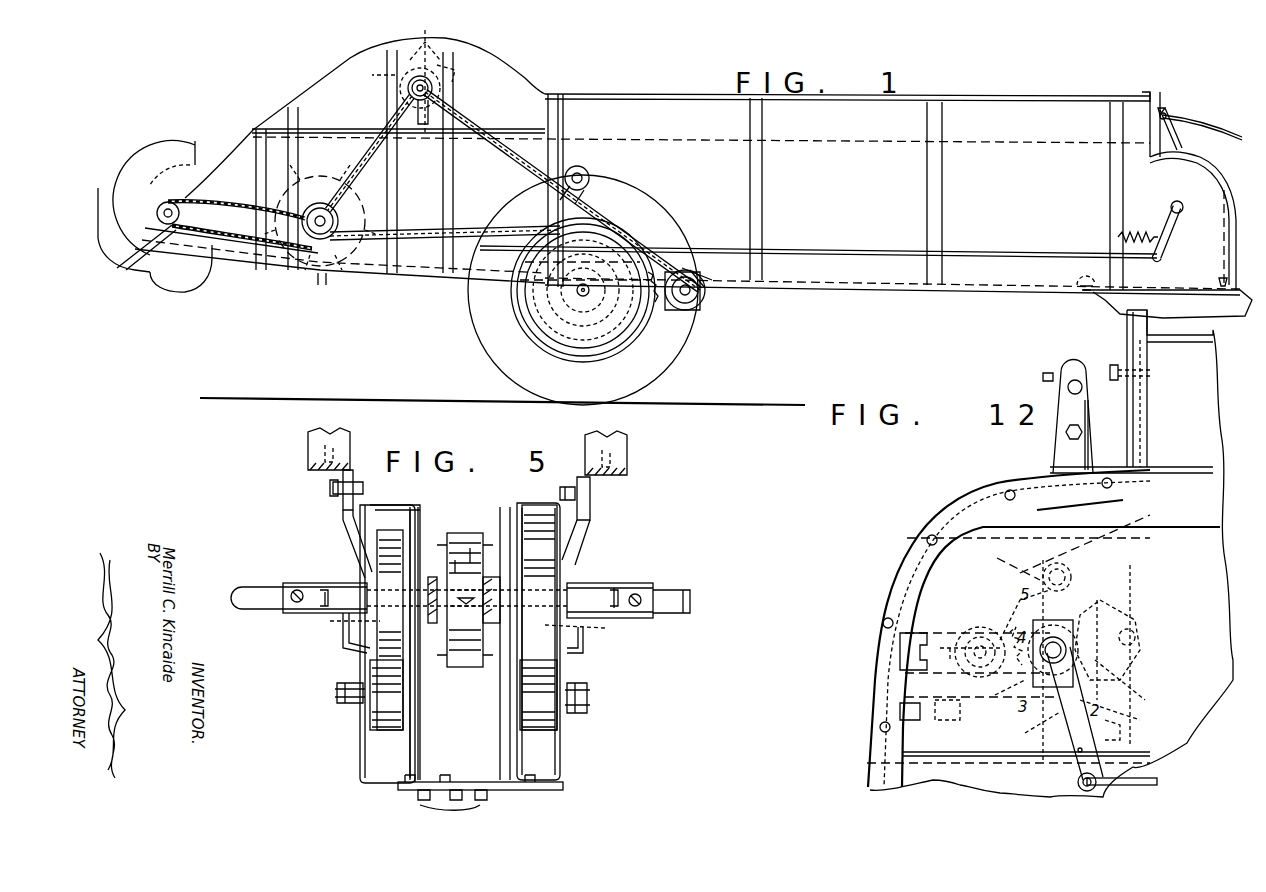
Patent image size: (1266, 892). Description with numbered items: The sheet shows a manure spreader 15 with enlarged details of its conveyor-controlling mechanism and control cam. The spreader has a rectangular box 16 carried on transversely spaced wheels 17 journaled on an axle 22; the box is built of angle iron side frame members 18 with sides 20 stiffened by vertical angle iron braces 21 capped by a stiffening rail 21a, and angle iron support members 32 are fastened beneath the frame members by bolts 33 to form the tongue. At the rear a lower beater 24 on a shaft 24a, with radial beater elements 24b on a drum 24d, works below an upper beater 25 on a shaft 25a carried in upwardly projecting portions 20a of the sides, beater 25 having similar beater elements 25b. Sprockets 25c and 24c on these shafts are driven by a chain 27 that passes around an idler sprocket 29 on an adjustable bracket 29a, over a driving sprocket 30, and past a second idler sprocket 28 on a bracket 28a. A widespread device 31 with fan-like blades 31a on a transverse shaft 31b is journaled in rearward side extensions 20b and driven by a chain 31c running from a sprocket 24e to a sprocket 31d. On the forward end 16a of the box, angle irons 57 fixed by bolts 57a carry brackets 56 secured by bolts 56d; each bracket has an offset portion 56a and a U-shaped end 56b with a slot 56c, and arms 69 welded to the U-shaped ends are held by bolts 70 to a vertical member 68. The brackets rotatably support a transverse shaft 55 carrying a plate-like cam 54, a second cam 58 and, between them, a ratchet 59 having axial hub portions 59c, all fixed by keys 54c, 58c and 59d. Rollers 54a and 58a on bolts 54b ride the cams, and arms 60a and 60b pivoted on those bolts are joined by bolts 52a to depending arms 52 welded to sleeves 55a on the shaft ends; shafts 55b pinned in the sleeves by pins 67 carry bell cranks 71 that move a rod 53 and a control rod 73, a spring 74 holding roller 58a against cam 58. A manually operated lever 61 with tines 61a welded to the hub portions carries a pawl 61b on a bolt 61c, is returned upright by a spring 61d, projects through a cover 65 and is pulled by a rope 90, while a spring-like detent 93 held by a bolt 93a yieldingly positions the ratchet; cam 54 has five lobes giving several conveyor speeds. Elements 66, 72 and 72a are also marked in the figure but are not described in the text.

In FIG. 1, the manure spreader 15 is at (1022, 95).
In FIG. 1, the rectangular box 16 is at (1158, 205).
In FIG. 12, the rectangular box 16 is at (1205, 444).
In FIG. 12, the forward end of the box 16a is at (1130, 358).
In FIG. 1, the wheels 17 is at (665, 360).
In FIG. 1, the angle iron side frame members 18 is at (1010, 281).
In FIG. 1, the sides 20 is at (820, 258).
In FIG. 1, the upwardly projecting portions of the sides 20a is at (382, 60).
In FIG. 1, the side extensions 20b is at (190, 250).
In FIG. 1, the angle iron braces 21 is at (564, 124).
In FIG. 1, the stiffening rail 21a is at (920, 96).
In FIG. 1, the axle 22 is at (583, 296).
In FIG. 1, the beater 24 is at (318, 190).
In FIG. 1, the shaft of beater 24 24a is at (318, 225).
In FIG. 1, the beater elements 24b is at (324, 285).
In FIG. 1, the sprocket on shaft 24a 24c is at (328, 205).
In FIG. 1, the drum 24d is at (365, 222).
In FIG. 1, the sprocket adjacent sprocket 24c 24e is at (312, 238).
In FIG. 1, the beater 25 is at (400, 82).
In FIG. 1, the shaft of beater 25 25a is at (448, 82).
In FIG. 1, the beater elements 25b is at (437, 52).
In FIG. 1, the sprocket on shaft 25a 25c is at (420, 128).
In FIG. 1, the chain 27 is at (490, 120).
In FIG. 1, the second idler sprocket 28 is at (590, 175).
In FIG. 1, the bracket 28a is at (582, 201).
In FIG. 1, the idler sprocket 29 is at (700, 303).
In FIG. 1, the adjustable bracket 29a is at (696, 268).
In FIG. 1, the driving sprocket 30 is at (652, 315).
In FIG. 1, the wide spread device 31 is at (135, 140).
In FIG. 1, the fan-like blades 31a is at (182, 150).
In FIG. 1, the transverse shaft 31b is at (160, 215).
In FIG. 1, the chain 31c is at (212, 272).
In FIG. 1, the sprocket 31d is at (160, 233).
In FIG. 1, the angle iron support members 32 is at (1210, 312).
In FIG. 1, the bolts 33 is at (1073, 288).
In FIG. 5, the depending arm 52 is at (322, 587).
In FIG. 12, the depending arm 52 is at (1062, 653).
In FIG. 5, the transverse bolt 52a is at (622, 588).
In FIG. 12, the rod 53 is at (1120, 786).
In FIG. 5, the plate-like cam 54 is at (545, 560).
In FIG. 12, the plate-like cam 54 is at (1140, 605).
In FIG. 5, the roller 54a is at (558, 725).
In FIG. 12, the roller 54a is at (985, 625).
In FIG. 5, the transverse bolt 54b is at (337, 692).
In FIG. 12, the transverse bolt 54b is at (965, 670).
In FIG. 5, the key 54c is at (592, 628).
In FIG. 5, the transverse shaft 55 is at (600, 590).
In FIG. 12, the transverse shaft 55 is at (1120, 632).
In FIG. 5, the tubular sleeve 55a is at (283, 585).
In FIG. 5, the shaft 55b is at (258, 593).
In FIG. 5, the brackets 56 is at (365, 565).
In FIG. 12, the brackets 56 is at (1150, 650).
In FIG. 5, the offset portion 56a is at (363, 558).
In FIG. 5, the U-shaped end portion 56b is at (365, 750).
In FIG. 12, the slot 56c is at (955, 640).
In FIG. 5, the bolt 56d is at (364, 490).
In FIG. 5, the angle irons 57 is at (308, 466).
In FIG. 5, the bolts 57a is at (343, 490).
In FIG. 5, the second plate-like cam 58 is at (378, 640).
In FIG. 5, the roller 58a is at (378, 716).
In FIG. 5, the key 58c is at (330, 622).
In FIG. 5, the ratchet 59 is at (462, 530).
In FIG. 5, the axial hub portions 59c is at (437, 560).
In FIG. 5, the key 59d is at (478, 530).
In FIG. 5, the U-shaped arm 60a is at (580, 648).
In FIG. 12, the U-shaped arm 60a is at (1128, 726).
In FIG. 5, the arm 60b is at (365, 632).
In FIG. 1, the manually operated lever 61 is at (1180, 144).
In FIG. 12, the manually operated lever 61 is at (1055, 393).
In FIG. 5, the tines 61a is at (432, 624).
In FIG. 12, the ratchet engaging pawl 61b is at (1003, 561).
In FIG. 12, the bolt 61c is at (1089, 660).
In FIG. 12, the spring 61d is at (1106, 537).
In FIG. 1, the cover 65 is at (1218, 170).
In FIG. 12, the cover 65 is at (948, 510).
In FIG. 1, the hood flange 66 is at (1229, 224).
In FIG. 12, the hood flange 66 is at (880, 608).
In FIG. 5, the pin 67 is at (297, 590).
In FIG. 5, the vertical member 68 is at (530, 797).
In FIG. 12, the vertical member 68 is at (900, 677).
In FIG. 5, the arm 69 is at (414, 782).
In FIG. 5, the bolt 70 is at (478, 775).
In FIG. 1, the bell cranks 71 is at (1165, 244).
In FIG. 12, the bell cranks 71 is at (1072, 762).
In FIG. 12, the lever link 72 is at (997, 702).
In FIG. 12, the link pin 72a is at (1026, 728).
In FIG. 1, the control rod 73 is at (848, 252).
In FIG. 1, the spring 74 is at (1138, 224).
In FIG. 1, the rope 90 is at (1195, 128).
In FIG. 12, the rope 90 is at (1040, 372).
In FIG. 5, the spring-like detent 93 is at (470, 712).
In FIG. 12, the spring-like detent 93 is at (947, 714).
In FIG. 5, the bolt 93a is at (432, 801).
In FIG. 12, the bolt 93a is at (900, 712).